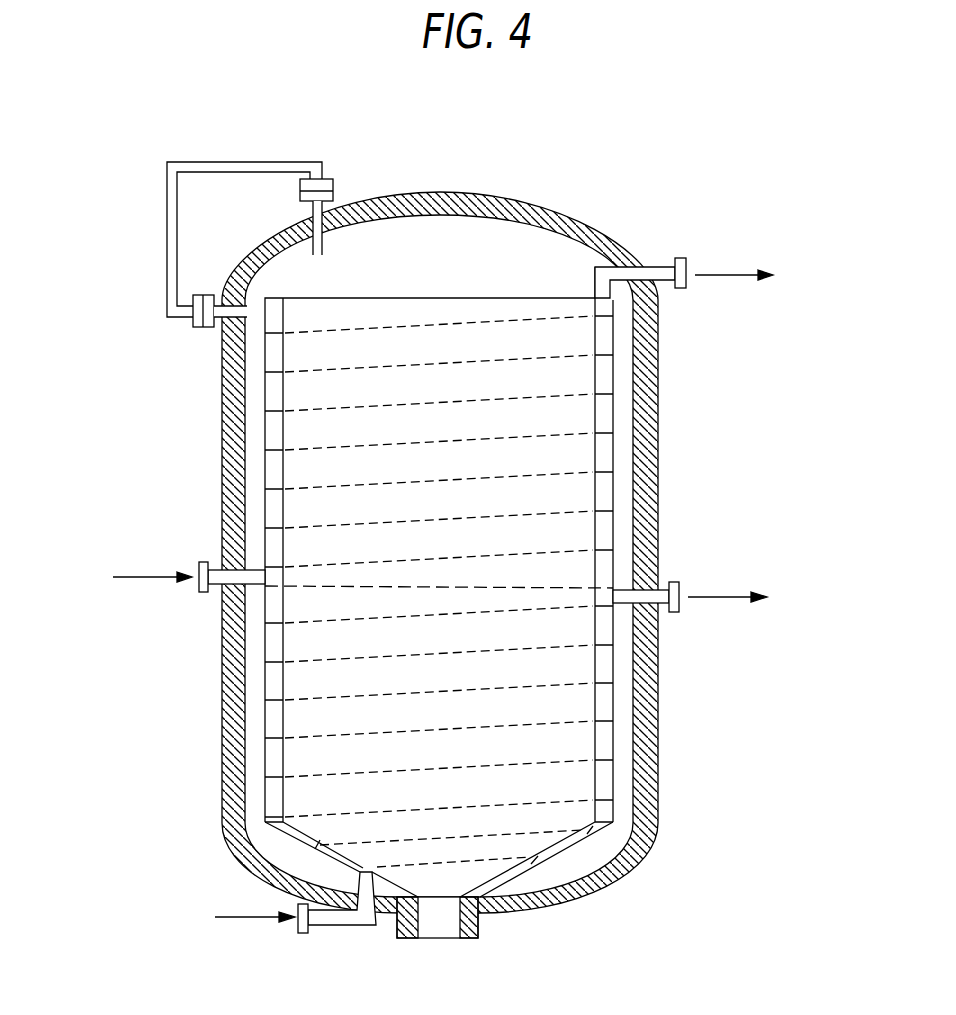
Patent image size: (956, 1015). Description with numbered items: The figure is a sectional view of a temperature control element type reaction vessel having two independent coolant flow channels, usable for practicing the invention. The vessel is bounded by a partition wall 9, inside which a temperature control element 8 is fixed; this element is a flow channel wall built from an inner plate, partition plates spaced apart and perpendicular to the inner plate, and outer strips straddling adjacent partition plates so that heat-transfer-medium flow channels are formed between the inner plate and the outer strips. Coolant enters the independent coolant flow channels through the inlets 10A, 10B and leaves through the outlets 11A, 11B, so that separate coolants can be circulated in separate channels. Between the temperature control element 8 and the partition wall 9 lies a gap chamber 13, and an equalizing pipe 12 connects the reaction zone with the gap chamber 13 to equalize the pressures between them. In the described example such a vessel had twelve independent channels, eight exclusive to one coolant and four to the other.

The temperature control element 8 is at (615, 402).
The partition wall 9 is at (583, 257).
The inlet to independent coolant flow channel 10A is at (293, 923).
The inlet to independent coolant flow channel 10B is at (200, 565).
The outlet from independent coolant flow channel 11A is at (682, 605).
The outlet from independent coolant flow channel 11B is at (688, 265).
The equalizing pipe 12 is at (167, 230).
The gap chamber 13 is at (623, 555).